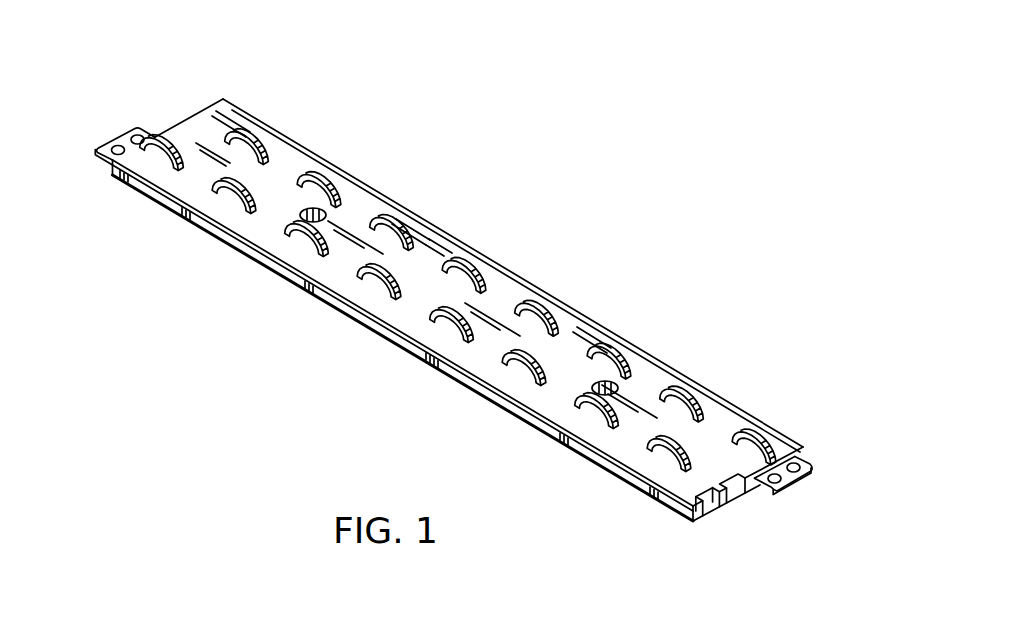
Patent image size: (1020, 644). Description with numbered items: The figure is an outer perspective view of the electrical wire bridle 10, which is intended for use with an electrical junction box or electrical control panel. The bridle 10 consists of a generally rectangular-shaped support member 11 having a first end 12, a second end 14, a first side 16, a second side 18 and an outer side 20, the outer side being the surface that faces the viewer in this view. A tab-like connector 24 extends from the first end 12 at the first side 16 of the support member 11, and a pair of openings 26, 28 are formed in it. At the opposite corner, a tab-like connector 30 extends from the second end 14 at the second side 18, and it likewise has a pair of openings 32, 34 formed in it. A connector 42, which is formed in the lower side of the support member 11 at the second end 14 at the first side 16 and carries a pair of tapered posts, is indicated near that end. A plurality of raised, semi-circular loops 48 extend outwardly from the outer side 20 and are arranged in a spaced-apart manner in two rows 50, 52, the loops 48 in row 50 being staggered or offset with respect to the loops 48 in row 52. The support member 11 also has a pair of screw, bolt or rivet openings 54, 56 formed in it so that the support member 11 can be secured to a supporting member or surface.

The electrical wire bridle 10 is at (587, 271).
The support member 11 is at (374, 201).
The first end 12 is at (197, 112).
The second end 14 is at (700, 496).
The first side 16 is at (578, 441).
The second side 18 is at (700, 382).
The outer side 20 is at (492, 338).
The tab-like connector 24 is at (112, 135).
The opening 26 is at (117, 155).
The opening 28 is at (140, 136).
The tab-like connector 30 is at (805, 459).
The opening 32 is at (779, 483).
The opening 34 is at (798, 470).
The connector 42 is at (727, 503).
The raised semi-circular loops 48 is at (470, 267).
The row 50 is at (310, 264).
The row 52 is at (428, 237).
The screw, bolt or rivet opening 54 is at (300, 215).
The screw, bolt or rivet opening 56 is at (592, 390).